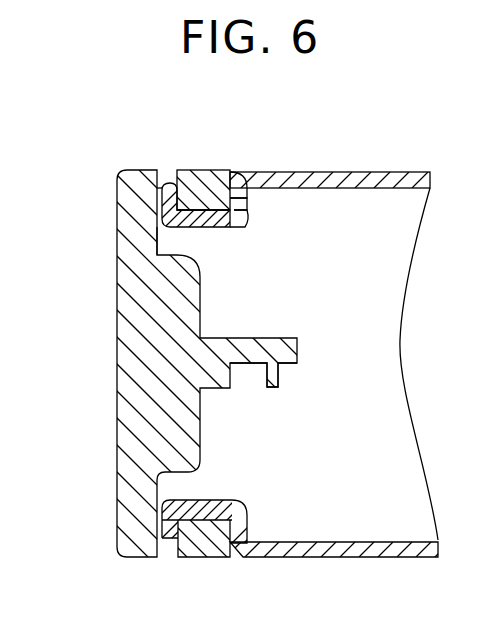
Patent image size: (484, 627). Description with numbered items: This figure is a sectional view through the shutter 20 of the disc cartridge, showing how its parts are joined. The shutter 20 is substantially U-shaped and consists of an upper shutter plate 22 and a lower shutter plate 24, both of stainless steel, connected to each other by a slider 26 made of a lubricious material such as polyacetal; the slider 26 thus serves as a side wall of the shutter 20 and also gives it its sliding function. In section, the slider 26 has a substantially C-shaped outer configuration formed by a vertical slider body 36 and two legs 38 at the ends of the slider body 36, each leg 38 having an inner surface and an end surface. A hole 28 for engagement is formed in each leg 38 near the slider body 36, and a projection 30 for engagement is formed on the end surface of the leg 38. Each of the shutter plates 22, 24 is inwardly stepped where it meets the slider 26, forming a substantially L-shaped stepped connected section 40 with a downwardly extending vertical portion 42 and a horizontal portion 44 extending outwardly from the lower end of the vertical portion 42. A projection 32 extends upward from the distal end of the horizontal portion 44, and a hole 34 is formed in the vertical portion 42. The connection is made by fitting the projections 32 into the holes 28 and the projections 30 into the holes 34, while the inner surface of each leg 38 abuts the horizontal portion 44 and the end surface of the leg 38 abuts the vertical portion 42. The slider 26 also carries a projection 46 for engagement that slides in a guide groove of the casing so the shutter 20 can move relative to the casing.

The shutter 20 is at (386, 172).
The upper shutter plate 22 is at (323, 172).
The lower shutter plate 24 is at (346, 548).
The slider 26 is at (102, 237).
The hole for engagement 28 is at (172, 186).
The projection for engagement 30 is at (248, 197).
The projection 32 is at (161, 188).
The hole 34 is at (247, 206).
The slider body 36 is at (128, 397).
The leg 38 is at (215, 172).
The stepped connected section 40 is at (172, 235).
The vertical portion 42 is at (230, 227).
The horizontal portion 44 is at (210, 227).
The projection for engagement 46 is at (282, 368).